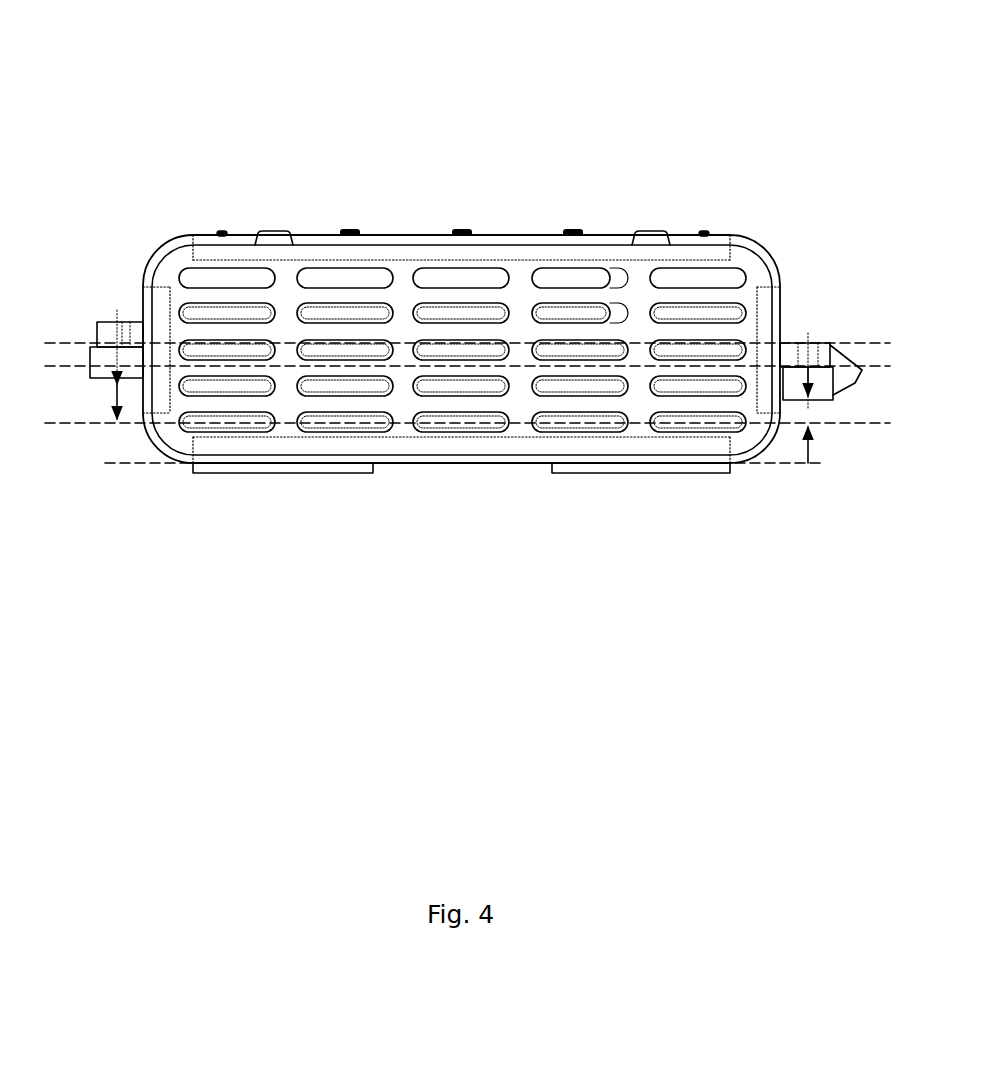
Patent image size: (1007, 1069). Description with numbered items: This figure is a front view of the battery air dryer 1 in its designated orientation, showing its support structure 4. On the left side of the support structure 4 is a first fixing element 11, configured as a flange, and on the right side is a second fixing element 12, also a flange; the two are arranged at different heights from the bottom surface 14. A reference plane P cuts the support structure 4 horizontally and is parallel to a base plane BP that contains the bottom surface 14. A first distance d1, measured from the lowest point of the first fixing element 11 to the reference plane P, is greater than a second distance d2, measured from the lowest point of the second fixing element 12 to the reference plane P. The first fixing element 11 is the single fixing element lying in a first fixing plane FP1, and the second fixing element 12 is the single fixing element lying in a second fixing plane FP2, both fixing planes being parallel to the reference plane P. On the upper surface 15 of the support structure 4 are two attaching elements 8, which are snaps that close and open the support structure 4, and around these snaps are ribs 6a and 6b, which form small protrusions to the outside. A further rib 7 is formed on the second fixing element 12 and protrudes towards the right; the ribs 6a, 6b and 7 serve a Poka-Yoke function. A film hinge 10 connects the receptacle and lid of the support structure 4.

The battery air dryer 1 is at (122, 185).
The support structure 4 is at (392, 236).
The rib 6a is at (221, 231).
The rib 6b is at (704, 231).
The rib 7 is at (838, 350).
The attaching elements 8 is at (278, 231).
The film hinge 10 is at (320, 474).
The first fixing element 11 is at (103, 334).
The second fixing element 12 is at (820, 355).
The bottom surface 14 is at (492, 472).
The upper surface 15 is at (515, 230).
The first fixing plane FP1 is at (493, 343).
The second fixing plane FP2 is at (493, 370).
The reference plane P is at (479, 424).
The base plane BP is at (462, 479).
The first distance d1 is at (97, 401).
The second distance d2 is at (826, 445).